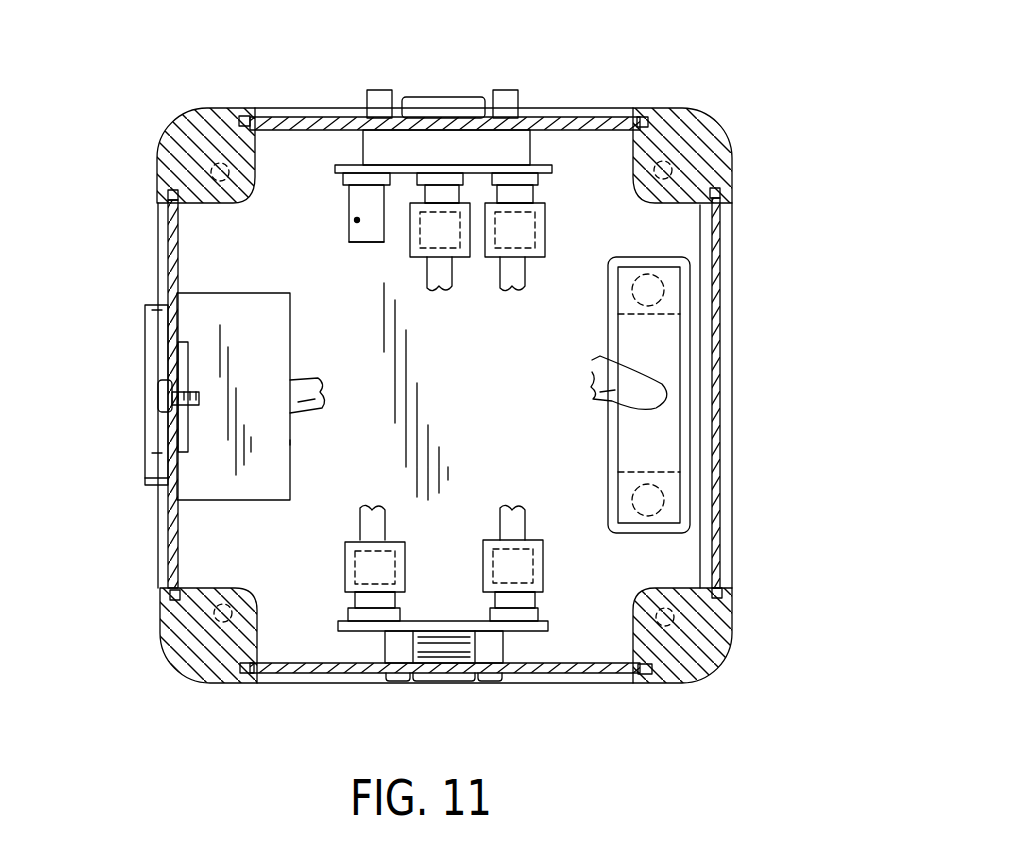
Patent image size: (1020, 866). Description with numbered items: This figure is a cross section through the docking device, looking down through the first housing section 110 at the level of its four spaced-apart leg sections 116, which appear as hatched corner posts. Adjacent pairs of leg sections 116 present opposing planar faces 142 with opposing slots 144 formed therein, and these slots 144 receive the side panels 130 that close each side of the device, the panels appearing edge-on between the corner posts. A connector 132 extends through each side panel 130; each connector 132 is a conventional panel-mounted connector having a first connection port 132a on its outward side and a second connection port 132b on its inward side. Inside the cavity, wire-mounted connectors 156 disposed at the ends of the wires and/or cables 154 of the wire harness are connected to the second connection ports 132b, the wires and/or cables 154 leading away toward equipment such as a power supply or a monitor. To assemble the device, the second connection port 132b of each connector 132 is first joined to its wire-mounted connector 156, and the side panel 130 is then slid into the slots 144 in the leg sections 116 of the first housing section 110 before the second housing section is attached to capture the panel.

The first housing section 110 is at (733, 140).
The leg section 116 is at (196, 113).
The side panel 130 is at (598, 128).
The connector 132 is at (468, 97).
The first connection port 132a is at (437, 100).
The second connection port 132b is at (430, 195).
The planar face 142 is at (250, 162).
The slot 144 is at (246, 113).
The wire or cable 154 is at (518, 295).
The wire-mounted connector 156 is at (412, 250).